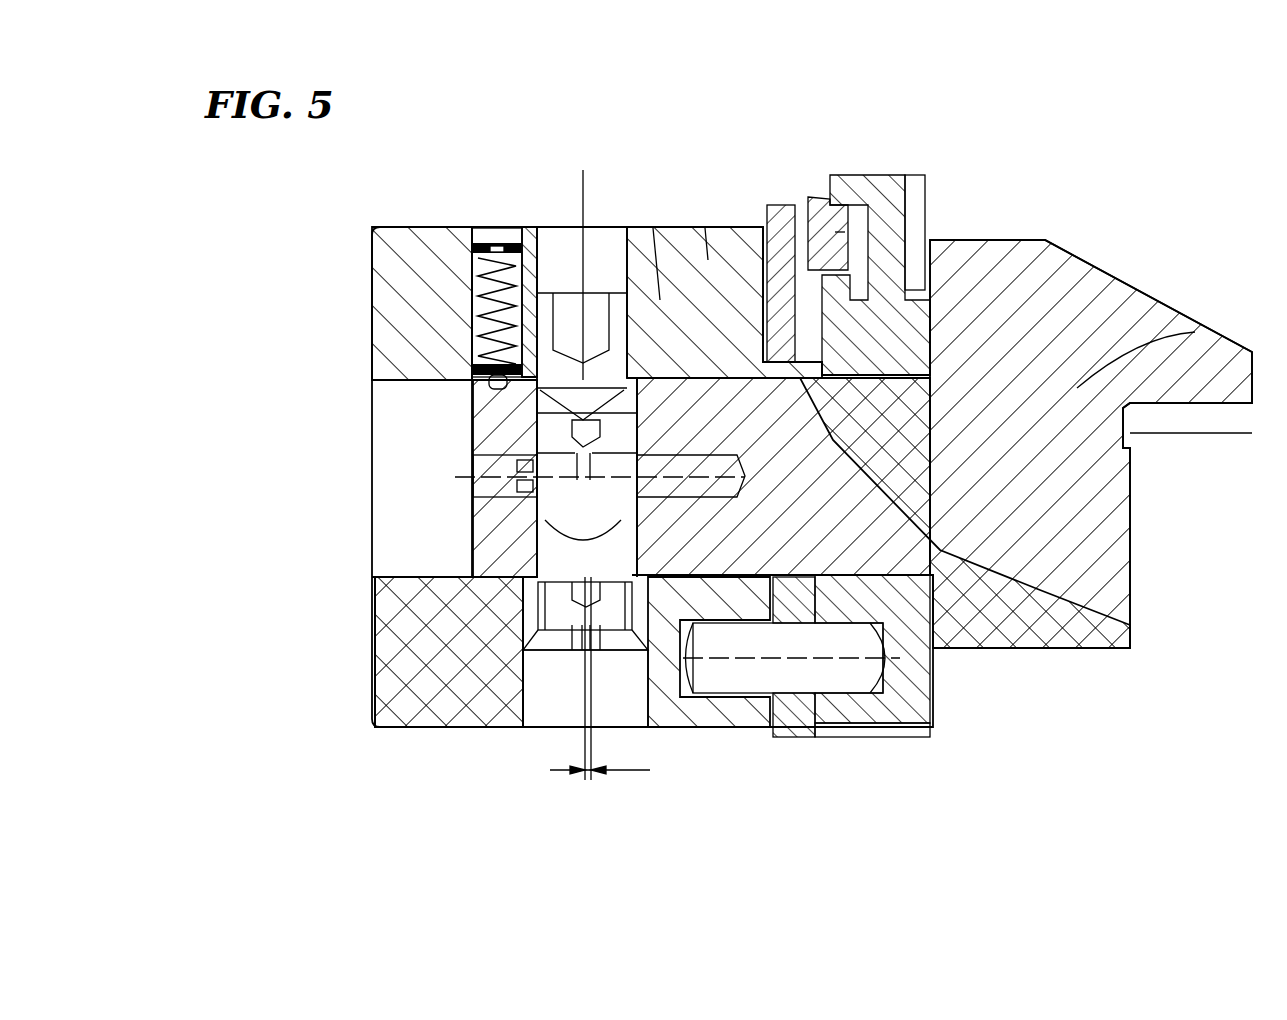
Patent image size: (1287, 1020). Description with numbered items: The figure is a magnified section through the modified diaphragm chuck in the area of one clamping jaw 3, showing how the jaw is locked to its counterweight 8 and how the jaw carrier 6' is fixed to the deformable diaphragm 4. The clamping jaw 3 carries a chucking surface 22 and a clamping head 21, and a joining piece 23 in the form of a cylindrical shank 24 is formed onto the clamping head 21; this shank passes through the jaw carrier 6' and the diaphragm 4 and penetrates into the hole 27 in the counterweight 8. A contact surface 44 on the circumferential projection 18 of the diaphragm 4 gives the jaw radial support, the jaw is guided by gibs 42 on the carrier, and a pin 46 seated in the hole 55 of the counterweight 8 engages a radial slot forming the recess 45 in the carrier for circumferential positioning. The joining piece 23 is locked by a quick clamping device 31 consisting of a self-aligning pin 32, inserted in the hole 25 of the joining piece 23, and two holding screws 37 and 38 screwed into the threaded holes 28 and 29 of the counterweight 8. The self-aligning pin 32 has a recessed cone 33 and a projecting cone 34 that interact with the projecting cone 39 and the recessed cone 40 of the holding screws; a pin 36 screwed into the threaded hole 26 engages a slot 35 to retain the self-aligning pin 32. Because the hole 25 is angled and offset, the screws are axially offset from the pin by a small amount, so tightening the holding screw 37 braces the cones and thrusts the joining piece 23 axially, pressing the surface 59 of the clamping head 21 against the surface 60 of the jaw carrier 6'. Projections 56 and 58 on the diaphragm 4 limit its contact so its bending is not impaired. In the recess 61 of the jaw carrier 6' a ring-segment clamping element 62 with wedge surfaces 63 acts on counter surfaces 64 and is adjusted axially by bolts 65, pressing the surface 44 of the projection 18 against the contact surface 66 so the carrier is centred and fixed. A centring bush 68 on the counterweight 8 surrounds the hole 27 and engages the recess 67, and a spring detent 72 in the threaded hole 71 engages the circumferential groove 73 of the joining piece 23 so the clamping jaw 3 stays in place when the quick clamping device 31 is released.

The clamping jaw 3 is at (1108, 272).
The diaphragm 4 is at (840, 232).
The jaw carrier 6' is at (917, 186).
The counterweight 8 is at (445, 228).
The circumferential projection 18 is at (930, 280).
The clamping head 21 is at (1178, 423).
The chucking surface 22 is at (1187, 412).
The joining piece 23 is at (653, 228).
The cylindrical shank 24 is at (545, 560).
The hole 25 is at (545, 300).
The threaded hole 26 is at (473, 478).
The hole 27 is at (540, 548).
The threaded hole 28 is at (575, 228).
The threaded hole 29 is at (572, 630).
The quick clamping device 31 is at (535, 213).
The self-aligning pin 32 is at (670, 727).
The recessed cone 33 is at (467, 382).
The projecting cone 34 is at (470, 670).
The slot 35 is at (475, 576).
The pin 36 is at (560, 498).
The holding screw 37 is at (610, 228).
The holding screw 38 is at (513, 687).
The projecting cone 39 is at (535, 385).
The recessed cone 40 is at (553, 680).
The gib 42 is at (942, 665).
The contact surface 44 is at (705, 228).
The recess 45 is at (935, 700).
The pin 46 is at (870, 690).
The hole 55 is at (715, 700).
The projection 56 is at (810, 695).
The projection 58 is at (800, 737).
The surface 59 is at (1078, 388).
The surface 60 is at (930, 357).
The recess 61 is at (930, 268).
The clamping element 62 is at (790, 205).
The wedge surface 63 is at (812, 197).
The counter surface 64 is at (866, 205).
The bolt 65 is at (925, 233).
The contact surface 66 is at (830, 395).
The recess 67 is at (805, 385).
The centring bush 68 is at (1043, 648).
The threaded hole 71 is at (495, 228).
The spring detent 72 is at (455, 389).
The circumferential groove 73 is at (470, 600).